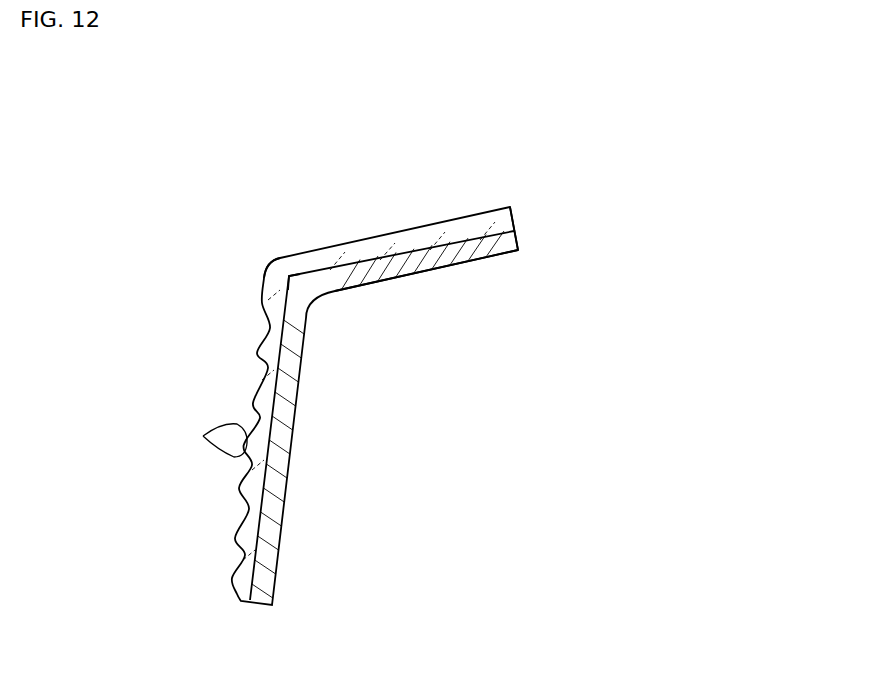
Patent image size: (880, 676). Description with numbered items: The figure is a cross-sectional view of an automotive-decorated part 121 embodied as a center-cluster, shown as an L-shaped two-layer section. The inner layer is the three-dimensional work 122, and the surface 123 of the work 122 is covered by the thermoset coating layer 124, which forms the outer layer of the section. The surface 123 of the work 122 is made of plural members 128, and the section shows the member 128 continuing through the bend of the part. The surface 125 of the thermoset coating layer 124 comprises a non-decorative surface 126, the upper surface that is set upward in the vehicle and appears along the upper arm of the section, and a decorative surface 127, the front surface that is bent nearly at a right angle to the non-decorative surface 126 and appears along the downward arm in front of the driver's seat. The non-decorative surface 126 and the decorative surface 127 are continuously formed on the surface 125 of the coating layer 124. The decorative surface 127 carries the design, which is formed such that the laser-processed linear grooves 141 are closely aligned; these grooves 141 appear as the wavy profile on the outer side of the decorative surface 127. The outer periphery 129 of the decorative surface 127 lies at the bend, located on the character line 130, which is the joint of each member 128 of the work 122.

The automotive-decorated part 121 is at (86, 139).
The three-dimensional work 122 is at (408, 262).
The surface of the work 123 is at (308, 382).
The thermoset coating layer 124 is at (498, 221).
The surface of the thermoset coating layer 125 is at (324, 350).
The non-decorative surface 126 is at (466, 212).
The decorative surface 127 is at (228, 516).
The member 128 is at (399, 242).
The outer periphery of the decorative surface 129 is at (256, 268).
The character line 130 is at (292, 264).
The laser-processed linear grooves 141 is at (204, 440).